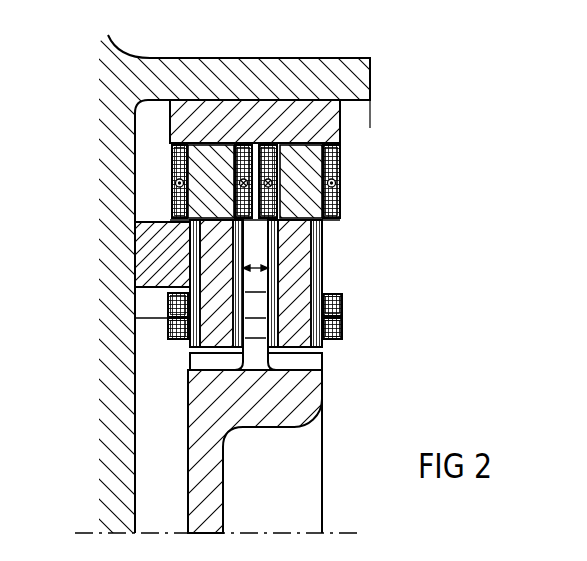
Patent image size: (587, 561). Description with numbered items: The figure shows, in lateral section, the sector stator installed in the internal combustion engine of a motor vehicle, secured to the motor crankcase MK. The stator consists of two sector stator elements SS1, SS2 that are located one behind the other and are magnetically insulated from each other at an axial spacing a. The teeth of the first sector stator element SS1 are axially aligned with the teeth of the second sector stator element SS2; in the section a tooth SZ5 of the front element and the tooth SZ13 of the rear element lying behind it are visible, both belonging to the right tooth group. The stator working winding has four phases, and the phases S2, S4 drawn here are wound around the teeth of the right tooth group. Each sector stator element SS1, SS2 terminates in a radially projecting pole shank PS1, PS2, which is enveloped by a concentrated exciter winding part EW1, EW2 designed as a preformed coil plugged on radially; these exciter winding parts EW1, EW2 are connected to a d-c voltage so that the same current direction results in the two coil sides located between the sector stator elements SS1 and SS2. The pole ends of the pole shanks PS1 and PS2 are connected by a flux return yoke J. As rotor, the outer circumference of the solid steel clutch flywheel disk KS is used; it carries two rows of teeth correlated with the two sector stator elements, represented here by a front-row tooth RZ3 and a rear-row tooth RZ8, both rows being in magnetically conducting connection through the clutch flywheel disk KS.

The motor crankcase MK is at (360, 75).
The flux return yoke J is at (333, 127).
The pole shank PS1 is at (303, 162).
The pole shank PS2 is at (203, 162).
The exciter winding part EW1 is at (336, 176).
The exciter winding part EW2 is at (172, 170).
The first sector stator element SS1 is at (293, 238).
The second sector stator element SS2 is at (197, 243).
The tooth SZ13 is at (218, 323).
The tooth SZ5 is at (293, 318).
The winding phase S4 is at (342, 302).
The winding phase S2 is at (342, 326).
The rotor tooth RZ8 is at (212, 356).
The rotor tooth RZ3 is at (300, 357).
The clutch flywheel disk KS is at (272, 424).
The axial spacing a is at (255, 284).